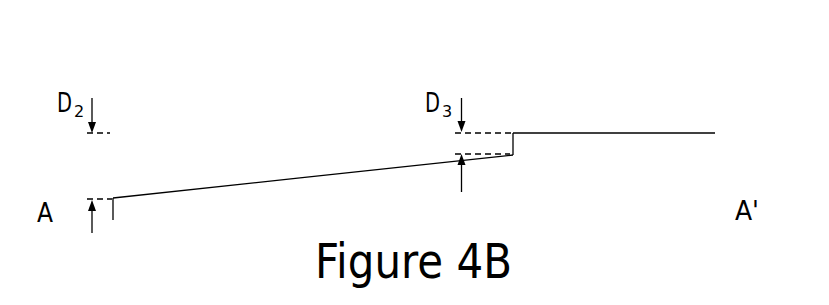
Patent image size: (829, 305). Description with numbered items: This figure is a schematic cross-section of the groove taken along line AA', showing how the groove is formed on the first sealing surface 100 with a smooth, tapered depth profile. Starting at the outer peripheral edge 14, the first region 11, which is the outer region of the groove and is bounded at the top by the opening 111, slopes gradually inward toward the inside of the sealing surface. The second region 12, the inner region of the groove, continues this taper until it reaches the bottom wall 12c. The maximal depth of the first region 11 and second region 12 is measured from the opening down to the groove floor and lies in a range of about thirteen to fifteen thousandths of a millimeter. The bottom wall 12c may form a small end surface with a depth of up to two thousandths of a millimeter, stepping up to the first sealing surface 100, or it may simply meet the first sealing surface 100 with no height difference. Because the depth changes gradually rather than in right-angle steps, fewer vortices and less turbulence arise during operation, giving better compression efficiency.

The first region 11 is at (202, 187).
The second region 12 is at (372, 168).
The bottom wall 12c is at (515, 148).
The outer peripheral edge 14 is at (116, 212).
The first sealing surface 100 is at (613, 133).
The opening 111 is at (113, 164).